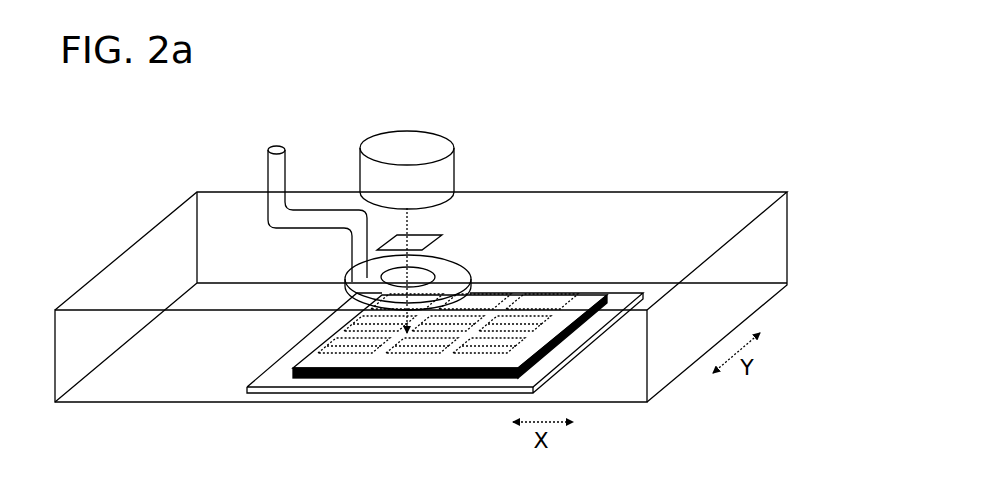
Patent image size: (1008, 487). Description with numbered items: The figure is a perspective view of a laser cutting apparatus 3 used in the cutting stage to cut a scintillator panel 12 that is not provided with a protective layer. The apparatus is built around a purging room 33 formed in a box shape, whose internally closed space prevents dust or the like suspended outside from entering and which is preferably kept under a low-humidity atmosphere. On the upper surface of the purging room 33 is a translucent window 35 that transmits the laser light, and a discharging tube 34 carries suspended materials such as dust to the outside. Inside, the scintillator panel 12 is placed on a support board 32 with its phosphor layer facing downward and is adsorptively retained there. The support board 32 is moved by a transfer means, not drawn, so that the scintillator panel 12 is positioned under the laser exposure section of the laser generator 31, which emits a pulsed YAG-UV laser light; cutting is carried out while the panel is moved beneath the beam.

The laser cutting apparatus 3 is at (433, 184).
The scintillator panel 12 is at (320, 390).
The laser generator 31 is at (443, 171).
The support board 32 is at (382, 378).
The purging room 33 is at (178, 206).
The discharging tube 34 is at (293, 150).
The translucent window 35 is at (440, 233).